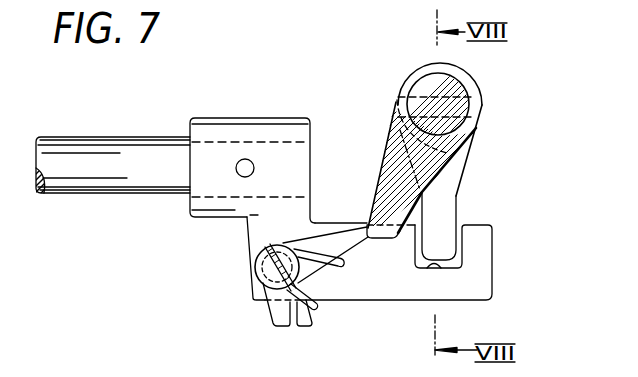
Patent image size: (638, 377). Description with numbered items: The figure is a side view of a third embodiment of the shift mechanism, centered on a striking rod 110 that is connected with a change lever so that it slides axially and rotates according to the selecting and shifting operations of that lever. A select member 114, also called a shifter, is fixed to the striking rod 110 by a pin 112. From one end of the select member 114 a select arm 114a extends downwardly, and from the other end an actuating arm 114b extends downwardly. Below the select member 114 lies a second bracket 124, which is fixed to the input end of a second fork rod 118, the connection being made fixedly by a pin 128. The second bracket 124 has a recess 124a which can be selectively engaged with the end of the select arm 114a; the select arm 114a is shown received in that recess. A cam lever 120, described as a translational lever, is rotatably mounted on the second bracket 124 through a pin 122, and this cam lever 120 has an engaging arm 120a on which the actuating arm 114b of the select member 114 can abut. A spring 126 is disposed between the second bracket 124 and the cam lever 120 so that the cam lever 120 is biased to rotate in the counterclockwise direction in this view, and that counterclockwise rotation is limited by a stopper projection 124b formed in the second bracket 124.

The striking rod 110 is at (476, 132).
The pin 112 is at (394, 107).
The select member 114 is at (483, 170).
The select arm 114a is at (458, 212).
The actuating arm 114b is at (383, 150).
The second fork rod 118 is at (118, 137).
The cam lever 120 is at (282, 243).
The engaging arm 120a is at (366, 240).
The pin 122 is at (272, 265).
The second bracket 124 is at (509, 258).
The recess 124a is at (442, 270).
The stopper projection 124b is at (298, 327).
The spring 126 is at (308, 300).
The pin 128 is at (236, 167).